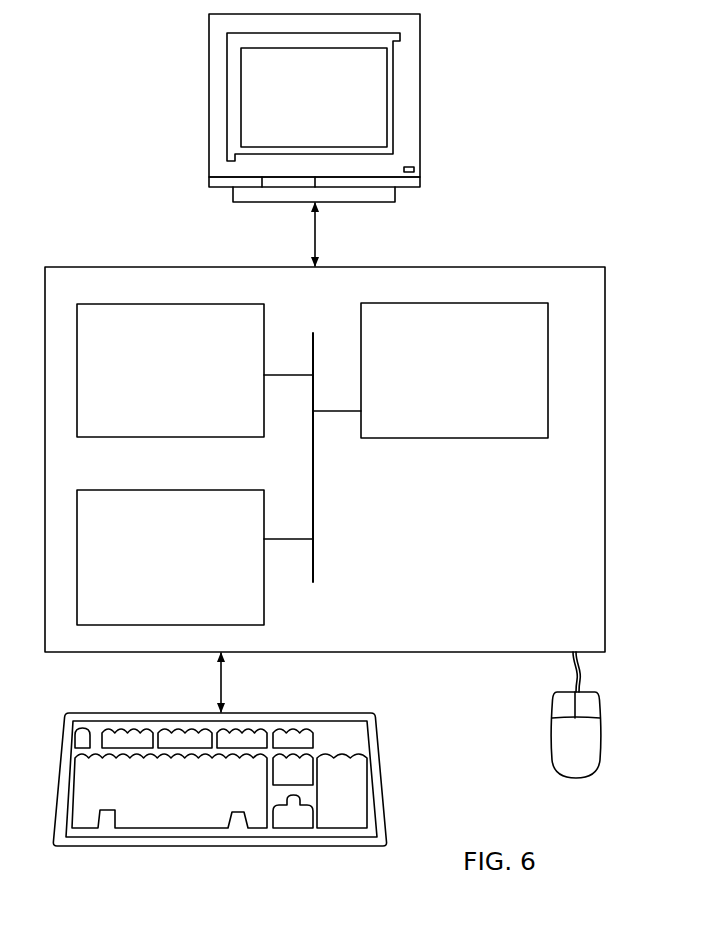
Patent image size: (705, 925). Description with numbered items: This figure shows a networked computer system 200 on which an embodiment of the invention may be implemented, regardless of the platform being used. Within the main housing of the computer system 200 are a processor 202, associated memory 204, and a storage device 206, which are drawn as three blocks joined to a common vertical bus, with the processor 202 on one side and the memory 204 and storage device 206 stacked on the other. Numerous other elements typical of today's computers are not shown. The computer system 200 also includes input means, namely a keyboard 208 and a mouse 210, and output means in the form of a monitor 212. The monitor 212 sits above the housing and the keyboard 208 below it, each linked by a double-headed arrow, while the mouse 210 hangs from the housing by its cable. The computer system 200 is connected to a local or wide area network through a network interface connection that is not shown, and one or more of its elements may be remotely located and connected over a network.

The networked computer system 200 is at (619, 144).
The processor 202 is at (456, 382).
The memory 204 is at (154, 383).
The storage device 206 is at (151, 567).
The keyboard 208 is at (148, 811).
The mouse 210 is at (558, 754).
The monitor 212 is at (296, 110).